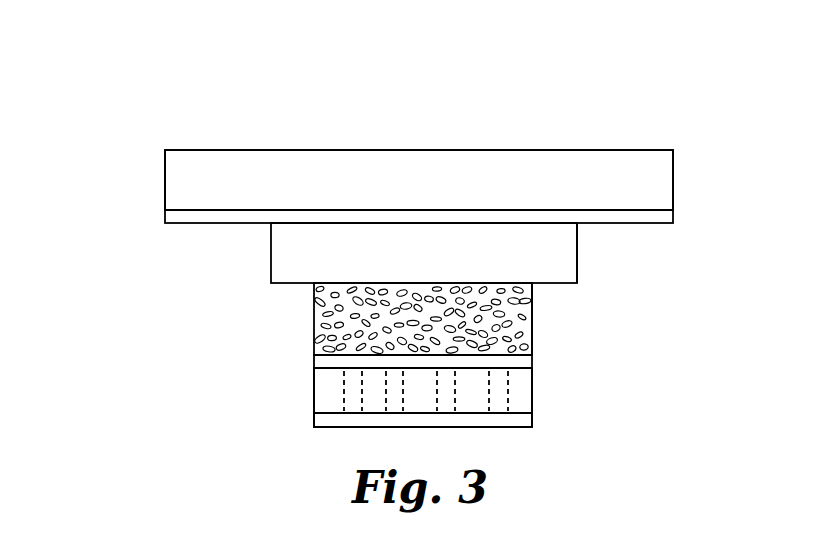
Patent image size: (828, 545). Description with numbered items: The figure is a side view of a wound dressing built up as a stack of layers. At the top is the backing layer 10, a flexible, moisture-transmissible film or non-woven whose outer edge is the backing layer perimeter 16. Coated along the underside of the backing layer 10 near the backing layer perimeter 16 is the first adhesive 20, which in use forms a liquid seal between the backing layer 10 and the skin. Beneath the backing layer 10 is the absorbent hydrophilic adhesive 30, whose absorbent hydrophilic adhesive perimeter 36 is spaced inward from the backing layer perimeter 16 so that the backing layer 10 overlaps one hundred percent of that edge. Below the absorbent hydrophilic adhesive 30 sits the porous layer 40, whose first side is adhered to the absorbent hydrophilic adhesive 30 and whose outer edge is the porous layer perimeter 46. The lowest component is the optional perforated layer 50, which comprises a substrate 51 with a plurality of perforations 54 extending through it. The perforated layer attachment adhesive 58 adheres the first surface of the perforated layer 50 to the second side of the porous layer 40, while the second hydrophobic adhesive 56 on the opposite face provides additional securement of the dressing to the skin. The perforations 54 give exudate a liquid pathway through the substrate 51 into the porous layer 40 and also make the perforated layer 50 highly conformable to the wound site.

The backing layer 10 is at (604, 150).
The backing layer perimeter 16 is at (177, 172).
The first adhesive 20 is at (173, 216).
The absorbent hydrophilic adhesive 30 is at (283, 245).
The absorbent hydrophilic adhesive perimeter 36 is at (577, 245).
The porous layer 40 is at (318, 315).
The porous layer perimeter 46 is at (532, 325).
The perforated layer 50 is at (594, 371).
The substrate 51 is at (317, 393).
The perforations 54 is at (508, 398).
The second hydrophobic adhesive 56 is at (320, 420).
The perforated layer attachment adhesive 58 is at (320, 363).